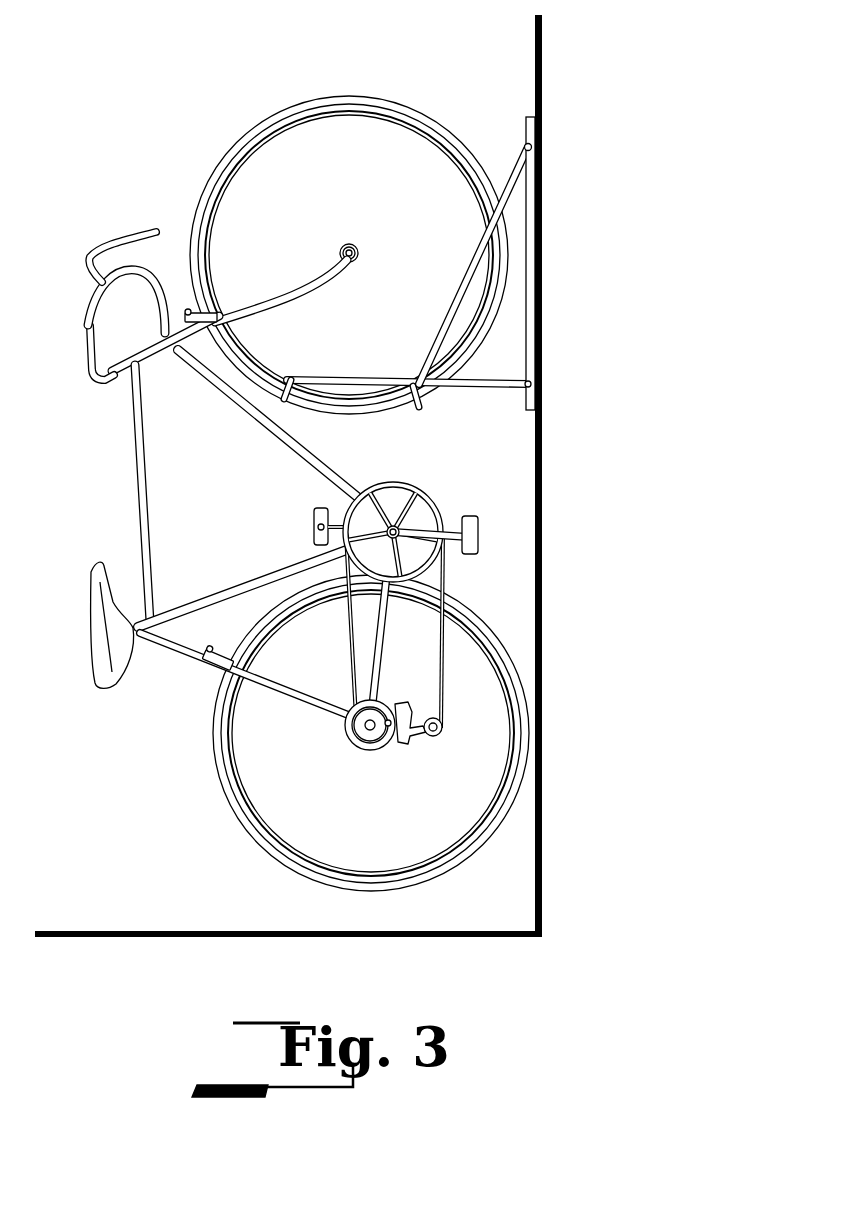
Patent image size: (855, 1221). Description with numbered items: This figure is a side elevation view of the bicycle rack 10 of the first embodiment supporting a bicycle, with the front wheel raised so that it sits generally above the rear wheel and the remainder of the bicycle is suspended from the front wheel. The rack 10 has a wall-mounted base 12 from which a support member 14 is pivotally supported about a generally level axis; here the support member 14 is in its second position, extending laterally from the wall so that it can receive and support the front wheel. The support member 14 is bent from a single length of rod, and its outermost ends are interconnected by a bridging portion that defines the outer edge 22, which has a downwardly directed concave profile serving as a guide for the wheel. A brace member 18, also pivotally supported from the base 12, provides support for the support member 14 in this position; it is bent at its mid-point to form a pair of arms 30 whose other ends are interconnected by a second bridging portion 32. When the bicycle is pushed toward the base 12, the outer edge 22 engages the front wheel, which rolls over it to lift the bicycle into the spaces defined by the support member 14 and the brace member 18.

The rack 10 is at (505, 338).
The base 12 is at (531, 262).
The support member 14 is at (352, 366).
The brace member 18 is at (456, 259).
The outer edge 22 is at (278, 400).
The arms 30 is at (521, 146).
The second bridging portion 32 is at (431, 412).